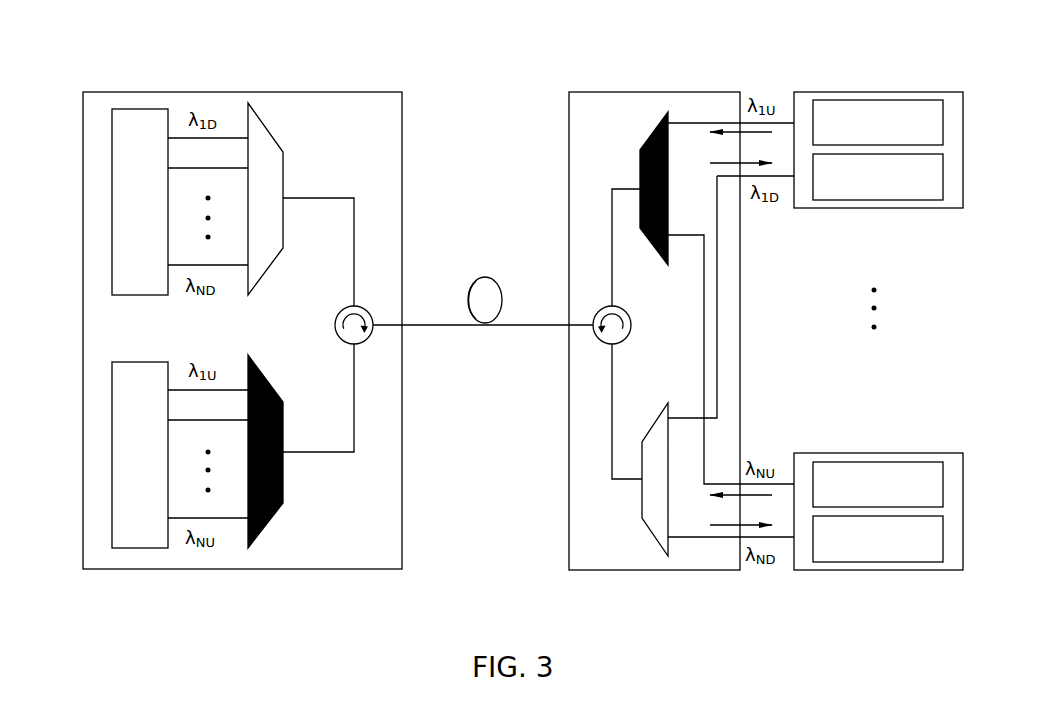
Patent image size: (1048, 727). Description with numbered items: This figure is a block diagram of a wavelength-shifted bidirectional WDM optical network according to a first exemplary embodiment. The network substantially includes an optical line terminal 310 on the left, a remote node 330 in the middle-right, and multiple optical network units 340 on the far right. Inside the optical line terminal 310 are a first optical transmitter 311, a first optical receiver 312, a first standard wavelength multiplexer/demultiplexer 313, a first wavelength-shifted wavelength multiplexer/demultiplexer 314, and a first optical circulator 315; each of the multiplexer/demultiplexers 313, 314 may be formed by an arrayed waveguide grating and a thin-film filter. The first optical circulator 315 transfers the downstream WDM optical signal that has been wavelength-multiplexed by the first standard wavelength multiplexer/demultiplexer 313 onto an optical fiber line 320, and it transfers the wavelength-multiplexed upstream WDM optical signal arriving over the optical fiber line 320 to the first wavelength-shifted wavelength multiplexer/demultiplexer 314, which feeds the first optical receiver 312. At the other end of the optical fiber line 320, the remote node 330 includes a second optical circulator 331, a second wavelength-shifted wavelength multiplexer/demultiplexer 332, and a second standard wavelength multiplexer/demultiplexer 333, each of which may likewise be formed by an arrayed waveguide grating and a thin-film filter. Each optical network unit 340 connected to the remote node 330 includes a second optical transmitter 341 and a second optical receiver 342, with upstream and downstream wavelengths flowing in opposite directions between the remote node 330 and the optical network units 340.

The optical line terminal 310 is at (332, 92).
The first optical transmitter 311 is at (137, 109).
The first optical receiver 312 is at (145, 548).
The first standard wavelength multiplexer/demultiplexer 313 is at (270, 128).
The first wavelength-shifted wavelength multiplexer/demultiplexer 314 is at (265, 523).
The first optical circulator 315 is at (364, 339).
The optical fiber line 320 is at (485, 278).
The remote node 330 is at (588, 92).
The second optical circulator 331 is at (602, 339).
The second wavelength-shifted wavelength multiplexer/demultiplexer 332 is at (657, 128).
The second standard wavelength multiplexer/demultiplexer 333 is at (650, 534).
The optical network unit 340 is at (872, 92).
The second optical transmitter 341 is at (943, 123).
The second optical receiver 342 is at (943, 175).